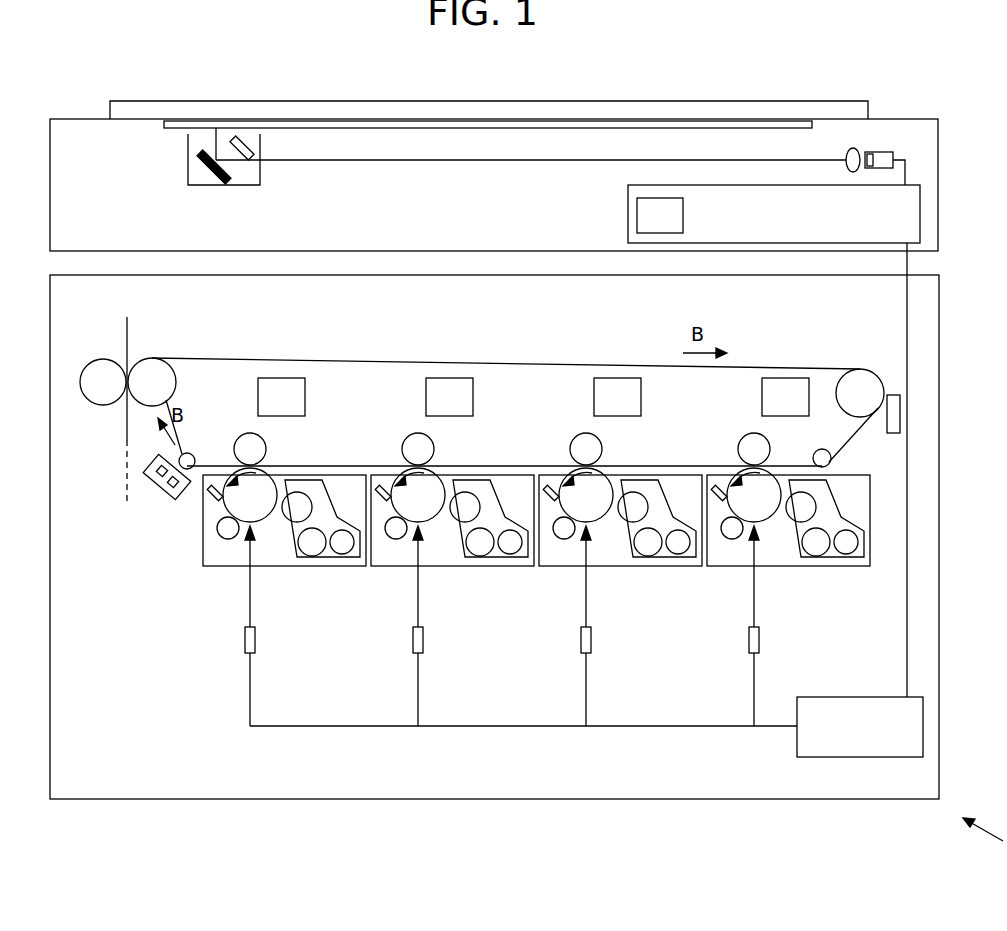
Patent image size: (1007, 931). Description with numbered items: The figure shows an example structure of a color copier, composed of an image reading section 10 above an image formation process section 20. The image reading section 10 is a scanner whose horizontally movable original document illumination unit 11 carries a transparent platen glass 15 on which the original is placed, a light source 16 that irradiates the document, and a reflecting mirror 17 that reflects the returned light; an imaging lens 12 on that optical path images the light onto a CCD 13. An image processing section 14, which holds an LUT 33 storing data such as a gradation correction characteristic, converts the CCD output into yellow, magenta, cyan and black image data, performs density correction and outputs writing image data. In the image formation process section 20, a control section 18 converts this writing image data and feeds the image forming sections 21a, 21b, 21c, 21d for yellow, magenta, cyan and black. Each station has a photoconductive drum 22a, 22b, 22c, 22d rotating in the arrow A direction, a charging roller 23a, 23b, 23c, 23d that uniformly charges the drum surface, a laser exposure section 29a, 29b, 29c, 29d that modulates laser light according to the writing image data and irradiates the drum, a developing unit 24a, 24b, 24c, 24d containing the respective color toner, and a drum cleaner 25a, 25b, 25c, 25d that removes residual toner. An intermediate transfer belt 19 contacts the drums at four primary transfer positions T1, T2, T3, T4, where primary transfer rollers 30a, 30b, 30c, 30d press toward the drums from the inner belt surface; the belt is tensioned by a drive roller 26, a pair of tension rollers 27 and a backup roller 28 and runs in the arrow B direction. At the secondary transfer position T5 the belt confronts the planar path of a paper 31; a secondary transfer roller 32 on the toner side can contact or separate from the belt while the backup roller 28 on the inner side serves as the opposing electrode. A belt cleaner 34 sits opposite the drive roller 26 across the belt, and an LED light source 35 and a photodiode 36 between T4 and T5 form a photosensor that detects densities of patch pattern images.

The image reading section 10 is at (938, 128).
The original document illumination unit 11 is at (260, 178).
The imaging lens 12 is at (846, 152).
The CCD 13 is at (884, 150).
The image processing section 14 is at (920, 212).
The platen glass 15 is at (738, 100).
The light source 16 is at (252, 150).
The reflecting mirror 17 is at (200, 155).
The control section 18 is at (880, 697).
The intermediate transfer belt 19 is at (515, 362).
The image formation process section 20 is at (939, 293).
The image forming section for yellow 21a is at (788, 541).
The image forming section for magenta 21b is at (620, 541).
The image forming section for cyan 21c is at (452, 541).
The image forming section for black 21d is at (270, 548).
The photoconductive drum 22a is at (704, 450).
The photoconductive drum 22b is at (536, 450).
The photoconductive drum 22c is at (368, 450).
The photoconductive drum 22d is at (210, 500).
The charging roller 23a is at (727, 565).
The charging roller 23b is at (559, 565).
The charging roller 23c is at (390, 565).
The charging roller 23d is at (231, 540).
The developing unit 24a is at (825, 544).
The developing unit 24b is at (657, 544).
The developing unit 24c is at (489, 544).
The developing unit 24d is at (327, 567).
The drum cleaner 25a is at (788, 370).
The drum cleaner 25b is at (620, 370).
The drum cleaner 25c is at (451, 370).
The drum cleaner 25d is at (285, 378).
The drive roller 26 is at (868, 381).
The tension rollers 27 is at (202, 441).
The backup roller 28 is at (148, 359).
The laser exposure section 29a is at (784, 626).
The laser exposure section 29b is at (616, 626).
The laser exposure section 29c is at (448, 626).
The laser exposure section 29d is at (256, 640).
The primary transfer roller 30a is at (744, 419).
The primary transfer roller 30b is at (576, 419).
The primary transfer roller 30c is at (408, 419).
The primary transfer roller 30d is at (246, 435).
The paper 31 is at (126, 483).
The secondary transfer roller 32 is at (110, 369).
The LUT 33 is at (636, 212).
The belt cleaner 34 is at (891, 430).
The LED light source 35 is at (170, 496).
The photodiode 36 is at (153, 482).
The primary transfer position T1 is at (793, 451).
The primary transfer position T2 is at (625, 451).
The primary transfer position T3 is at (457, 451).
The primary transfer position T4 is at (262, 466).
The secondary transfer position T5 is at (122, 441).